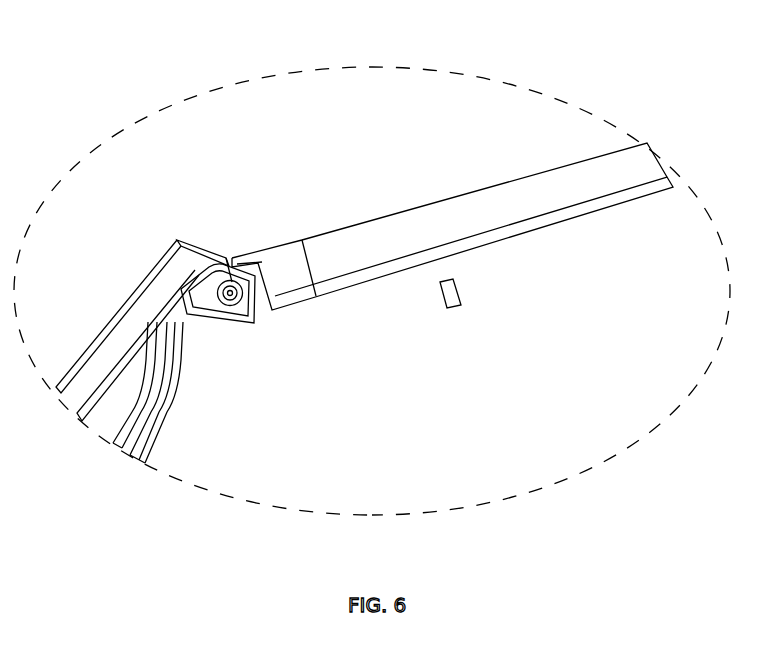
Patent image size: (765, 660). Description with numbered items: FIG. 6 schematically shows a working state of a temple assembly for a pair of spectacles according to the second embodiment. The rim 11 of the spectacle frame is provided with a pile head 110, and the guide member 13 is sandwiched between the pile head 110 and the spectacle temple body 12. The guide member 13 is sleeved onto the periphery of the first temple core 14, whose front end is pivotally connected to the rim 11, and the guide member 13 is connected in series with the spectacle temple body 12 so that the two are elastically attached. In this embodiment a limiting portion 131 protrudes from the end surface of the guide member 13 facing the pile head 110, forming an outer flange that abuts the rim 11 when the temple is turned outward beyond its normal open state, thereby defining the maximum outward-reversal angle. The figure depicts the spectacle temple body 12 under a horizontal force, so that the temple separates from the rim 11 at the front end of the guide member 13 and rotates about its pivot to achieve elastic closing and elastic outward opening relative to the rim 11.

The rim 11 is at (135, 318).
The pile head 110 is at (178, 243).
The spectacle temple body 12 is at (382, 240).
The guide member 13 is at (285, 246).
The limiting portion 131 is at (246, 258).
The first temple core 14 is at (256, 298).